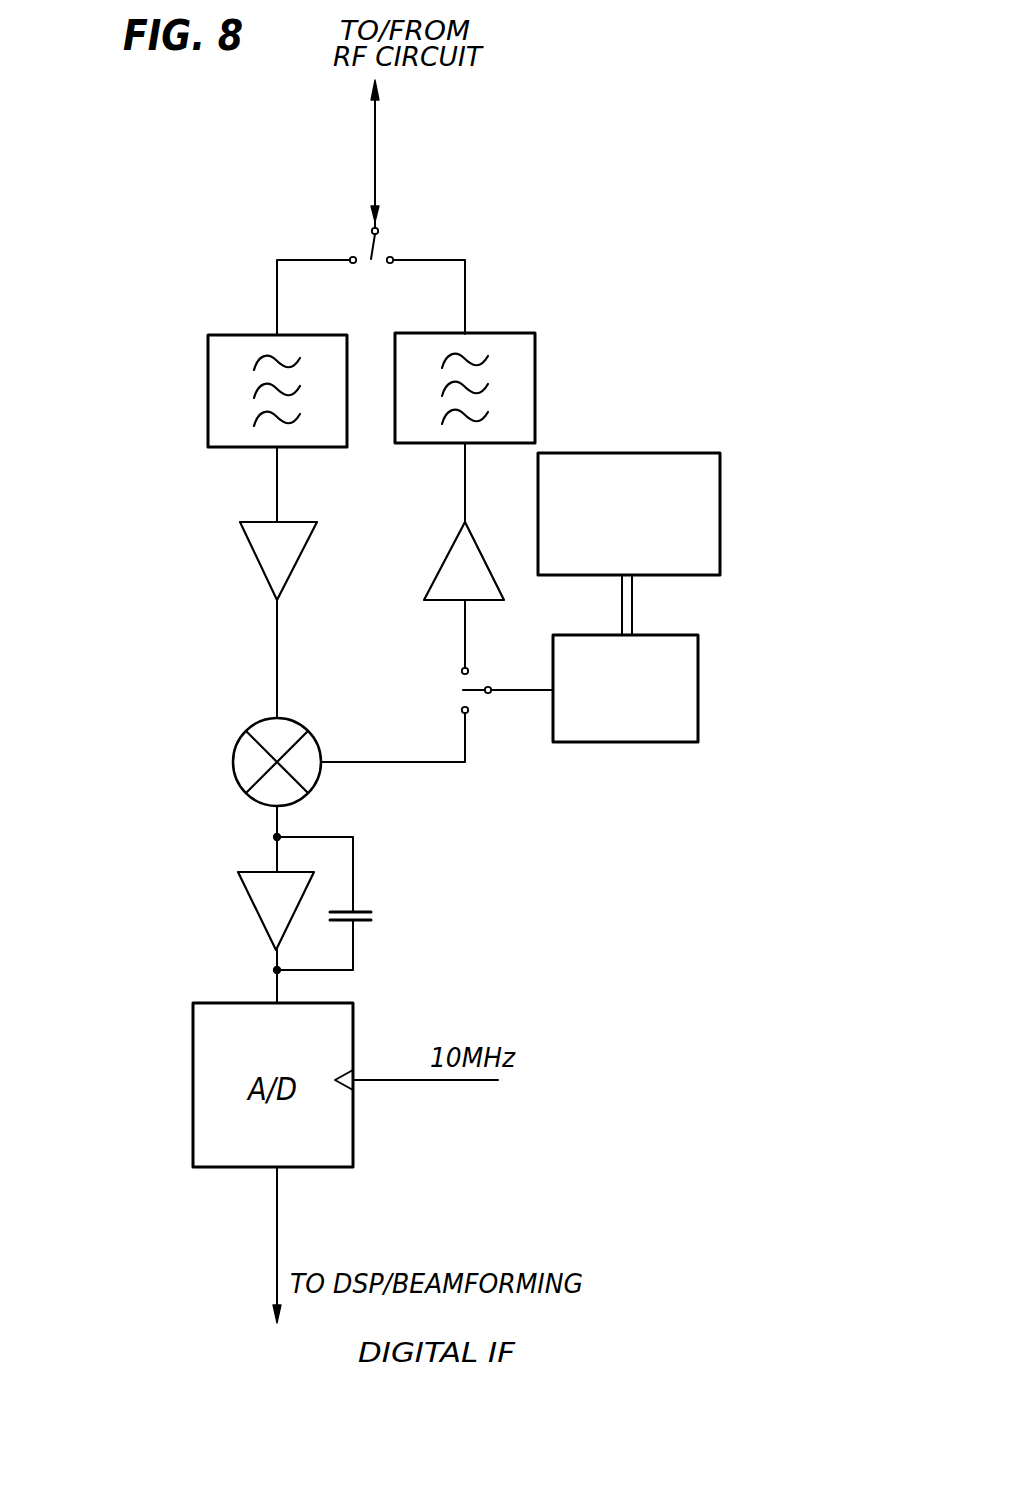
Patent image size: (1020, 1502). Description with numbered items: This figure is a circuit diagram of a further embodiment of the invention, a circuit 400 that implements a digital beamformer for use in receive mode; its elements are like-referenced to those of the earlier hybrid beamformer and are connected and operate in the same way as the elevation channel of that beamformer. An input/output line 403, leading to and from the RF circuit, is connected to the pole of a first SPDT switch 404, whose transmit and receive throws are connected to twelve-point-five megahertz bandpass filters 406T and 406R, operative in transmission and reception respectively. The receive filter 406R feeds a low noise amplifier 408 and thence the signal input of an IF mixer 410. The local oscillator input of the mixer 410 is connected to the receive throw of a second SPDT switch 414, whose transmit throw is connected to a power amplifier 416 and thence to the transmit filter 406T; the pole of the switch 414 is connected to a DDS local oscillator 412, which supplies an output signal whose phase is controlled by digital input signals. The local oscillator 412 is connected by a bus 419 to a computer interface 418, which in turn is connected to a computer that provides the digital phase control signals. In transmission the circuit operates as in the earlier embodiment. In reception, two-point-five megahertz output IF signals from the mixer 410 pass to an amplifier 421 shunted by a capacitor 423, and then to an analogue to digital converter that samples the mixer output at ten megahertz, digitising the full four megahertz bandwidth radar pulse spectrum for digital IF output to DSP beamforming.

The circuit 400 is at (537, 107).
The input/output line 403 is at (375, 157).
The first SPDT switch 404 is at (368, 265).
The receive bandpass filter 406R is at (247, 313).
The transmit bandpass filter 406T is at (527, 331).
The low noise amplifier 408 is at (255, 522).
The power amplifier 416 is at (453, 542).
The computer interface 418 is at (675, 458).
The bus 419 is at (635, 613).
The DDS local oscillator 412 is at (687, 710).
The second SPDT switch 414 is at (462, 699).
The IF mixer 410 is at (250, 797).
The amplifier 421 is at (248, 895).
The capacitor 423 is at (377, 913).